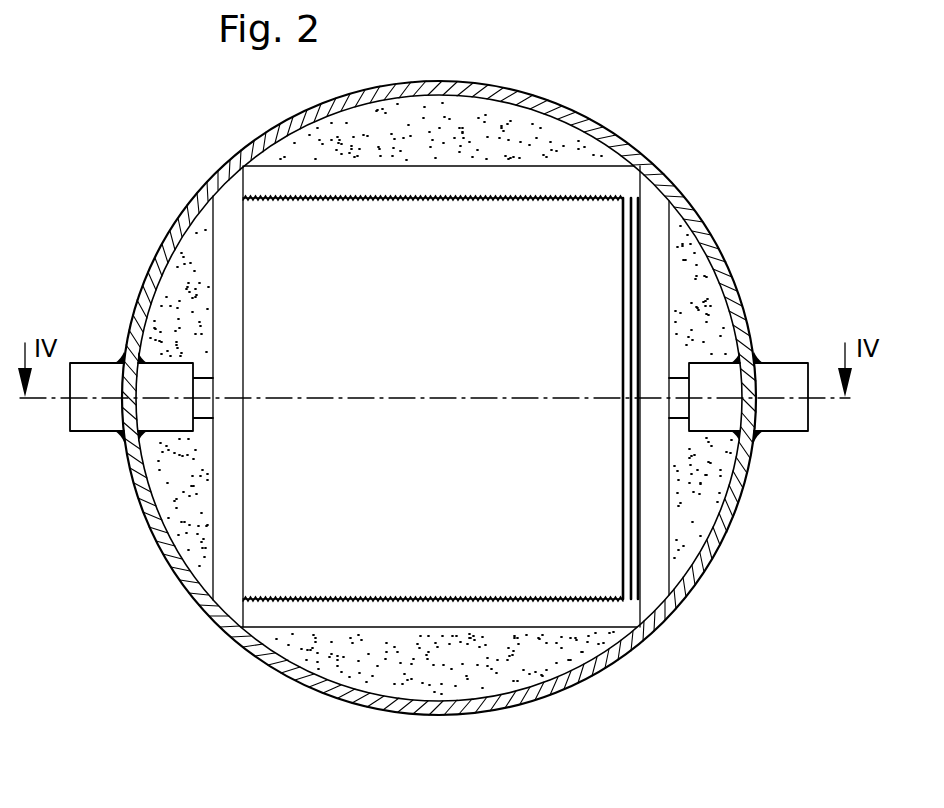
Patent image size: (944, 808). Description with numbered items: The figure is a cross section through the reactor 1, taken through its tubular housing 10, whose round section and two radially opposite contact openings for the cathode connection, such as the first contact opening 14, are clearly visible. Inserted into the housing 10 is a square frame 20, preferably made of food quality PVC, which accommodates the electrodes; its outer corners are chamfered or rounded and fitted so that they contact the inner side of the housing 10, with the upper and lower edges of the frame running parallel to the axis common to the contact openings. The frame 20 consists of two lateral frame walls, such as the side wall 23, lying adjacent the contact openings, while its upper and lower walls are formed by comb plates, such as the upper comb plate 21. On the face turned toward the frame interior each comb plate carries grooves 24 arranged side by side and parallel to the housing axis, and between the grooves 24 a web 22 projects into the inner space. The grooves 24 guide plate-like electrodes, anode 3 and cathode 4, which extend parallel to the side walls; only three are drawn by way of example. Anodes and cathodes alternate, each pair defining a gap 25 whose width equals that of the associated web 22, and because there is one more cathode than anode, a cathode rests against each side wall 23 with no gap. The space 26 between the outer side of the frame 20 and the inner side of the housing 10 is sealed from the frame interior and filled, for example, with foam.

The reactor 1 is at (683, 148).
The housing 10 is at (688, 204).
The frame 20 is at (201, 537).
The space 26 is at (540, 668).
The upper comb plate 21 is at (351, 186).
The web 22 is at (552, 201).
The grooves 24 is at (487, 201).
The lateral frame wall 23 is at (234, 308).
The anode 3 is at (622, 298).
The cathode 4 is at (630, 270).
The gap 25 is at (630, 500).
The first contact opening 14 is at (95, 433).